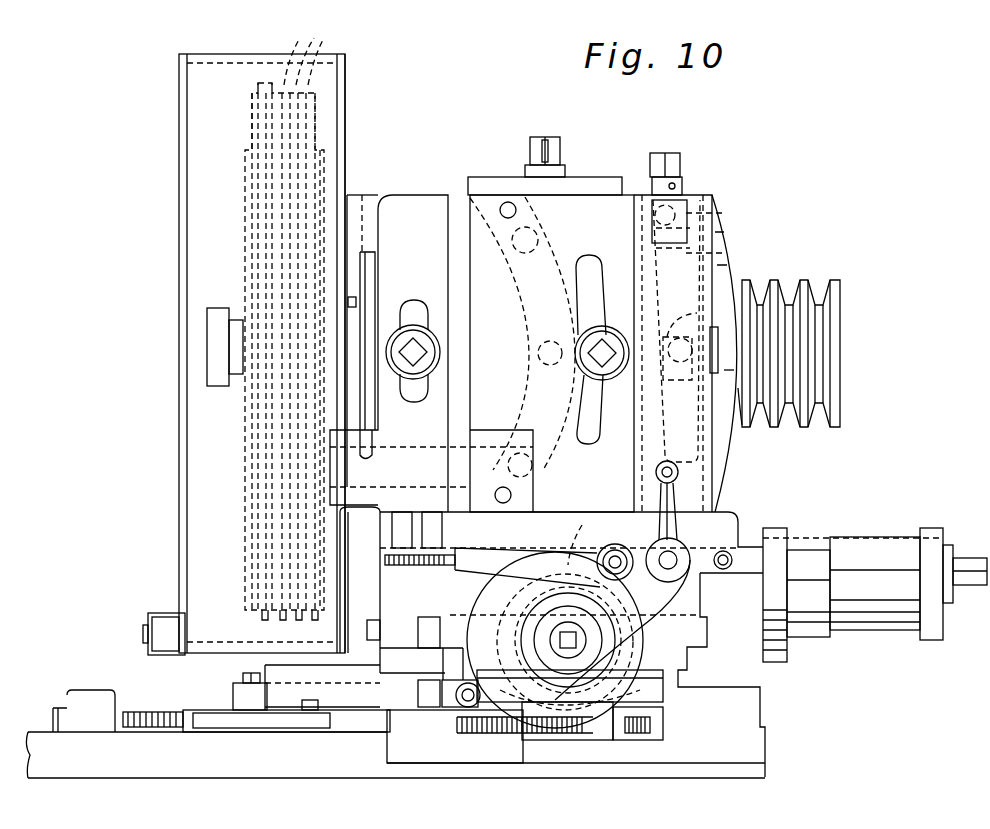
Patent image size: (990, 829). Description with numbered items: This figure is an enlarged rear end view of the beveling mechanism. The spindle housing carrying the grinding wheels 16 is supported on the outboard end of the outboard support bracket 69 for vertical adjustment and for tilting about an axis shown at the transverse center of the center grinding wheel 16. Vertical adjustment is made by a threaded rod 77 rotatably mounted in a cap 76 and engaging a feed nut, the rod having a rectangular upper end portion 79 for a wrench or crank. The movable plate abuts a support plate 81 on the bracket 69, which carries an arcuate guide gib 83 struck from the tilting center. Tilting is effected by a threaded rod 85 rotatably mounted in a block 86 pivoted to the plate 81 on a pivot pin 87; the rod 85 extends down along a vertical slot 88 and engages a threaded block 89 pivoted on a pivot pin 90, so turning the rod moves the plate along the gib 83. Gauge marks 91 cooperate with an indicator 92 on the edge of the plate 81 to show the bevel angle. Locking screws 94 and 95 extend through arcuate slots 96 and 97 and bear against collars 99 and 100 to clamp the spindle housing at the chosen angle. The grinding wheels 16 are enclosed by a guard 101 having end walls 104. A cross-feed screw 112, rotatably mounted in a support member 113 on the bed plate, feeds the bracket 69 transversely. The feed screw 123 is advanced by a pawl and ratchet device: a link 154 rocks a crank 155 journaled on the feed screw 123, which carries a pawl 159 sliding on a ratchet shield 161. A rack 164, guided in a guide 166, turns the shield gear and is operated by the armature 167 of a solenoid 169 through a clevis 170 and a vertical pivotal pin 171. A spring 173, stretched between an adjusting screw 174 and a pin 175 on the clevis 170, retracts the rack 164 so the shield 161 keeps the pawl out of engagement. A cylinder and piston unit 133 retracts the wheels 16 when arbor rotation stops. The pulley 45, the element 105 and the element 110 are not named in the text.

The grinding wheels 16 is at (287, 322).
The multi-groove pulley 45 is at (823, 282).
The outboard support bracket 69 is at (456, 240).
The cap 76 is at (604, 186).
The threaded rod 77 is at (567, 172).
The rectangular upper end portion 79 is at (553, 150).
The support plate 81 is at (415, 205).
The arcuate guide gib 83 is at (557, 248).
The threaded rod 85 is at (681, 168).
The block 86 is at (681, 215).
The pivot pin 87 is at (722, 214).
The vertical slot 88 is at (711, 256).
The threaded block 89 is at (710, 322).
The pivot pin 90 is at (705, 366).
The gauge marks 91 is at (742, 425).
The indicator 92 is at (714, 346).
The locking screw 94 is at (418, 334).
The locking screw 95 is at (606, 340).
The arcuate slot 96 is at (420, 380).
The arcuate slot 97 is at (600, 428).
The collar 99 is at (441, 350).
The collar 100 is at (578, 378).
The guard 101 is at (186, 178).
The end wall 104 is at (346, 118).
The bracket 105 is at (186, 318).
The lever pivot 110 is at (620, 556).
The cross-feed screw 112 is at (975, 556).
The support member 113 is at (862, 536).
The feed screw 123 is at (620, 632).
The cylinder and piston unit 133 is at (872, 636).
The link 154 is at (488, 548).
The crank 155 is at (652, 600).
The pawl 159 is at (591, 537).
The ratchet shield 161 is at (575, 642).
The rack 164 is at (660, 706).
The guide 166 is at (655, 694).
The armature 167 is at (395, 682).
The solenoid 169 is at (270, 660).
The clevis 170 is at (462, 680).
The vertical pivotal pin 171 is at (430, 640).
The spring 173 is at (488, 745).
The adjusting screw 174 is at (658, 736).
The pin 175 is at (448, 728).